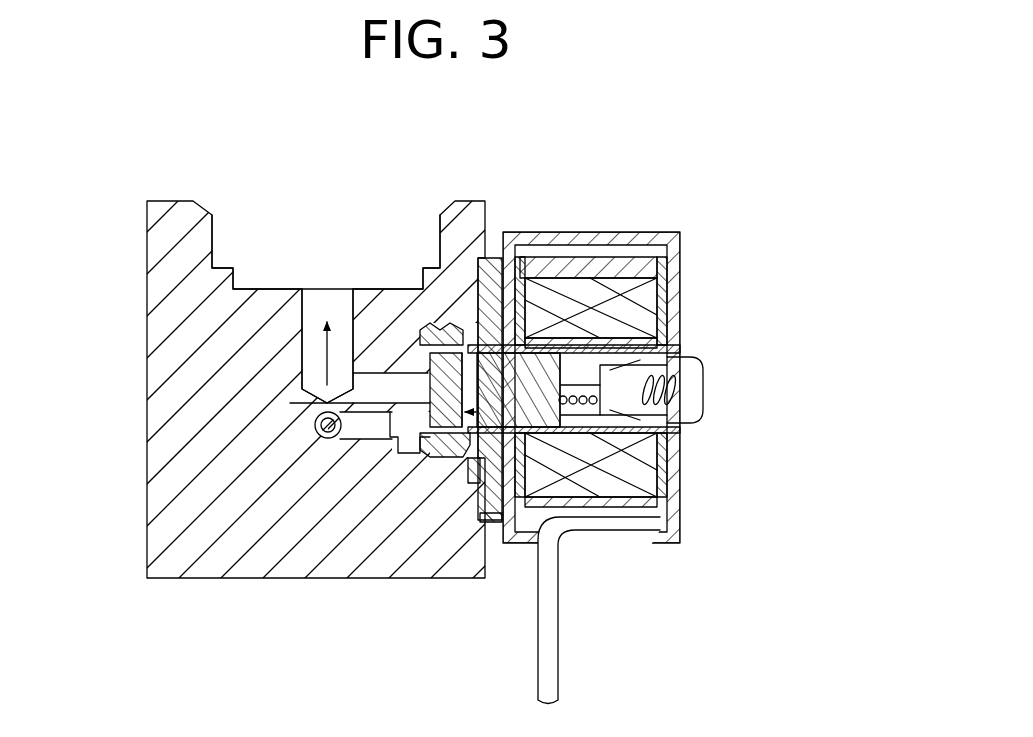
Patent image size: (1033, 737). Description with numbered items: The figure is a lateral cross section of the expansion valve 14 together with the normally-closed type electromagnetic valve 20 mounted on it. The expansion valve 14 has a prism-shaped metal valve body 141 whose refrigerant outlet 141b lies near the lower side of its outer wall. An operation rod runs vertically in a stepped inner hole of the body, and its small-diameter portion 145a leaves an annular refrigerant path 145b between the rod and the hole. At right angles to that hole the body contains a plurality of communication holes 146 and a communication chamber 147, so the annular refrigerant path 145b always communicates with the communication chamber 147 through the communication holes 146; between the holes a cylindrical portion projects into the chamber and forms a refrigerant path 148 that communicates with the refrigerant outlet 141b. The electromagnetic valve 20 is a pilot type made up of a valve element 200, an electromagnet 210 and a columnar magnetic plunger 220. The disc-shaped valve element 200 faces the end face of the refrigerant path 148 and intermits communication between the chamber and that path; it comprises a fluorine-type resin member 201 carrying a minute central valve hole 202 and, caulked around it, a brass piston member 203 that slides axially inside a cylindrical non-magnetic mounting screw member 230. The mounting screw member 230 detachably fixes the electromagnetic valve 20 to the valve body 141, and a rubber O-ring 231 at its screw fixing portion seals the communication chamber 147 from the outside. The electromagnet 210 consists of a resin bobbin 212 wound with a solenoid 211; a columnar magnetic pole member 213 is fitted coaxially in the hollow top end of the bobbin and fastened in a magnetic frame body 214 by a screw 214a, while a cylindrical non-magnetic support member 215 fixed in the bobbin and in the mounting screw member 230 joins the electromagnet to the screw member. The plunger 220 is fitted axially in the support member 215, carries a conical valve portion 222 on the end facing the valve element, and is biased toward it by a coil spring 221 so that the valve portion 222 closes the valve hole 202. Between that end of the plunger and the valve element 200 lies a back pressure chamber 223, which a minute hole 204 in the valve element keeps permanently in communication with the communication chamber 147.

The expansion valve 14 is at (132, 333).
The valve body 141 is at (177, 422).
The refrigerant outlet 141b is at (276, 232).
The small-diameter portion 145a is at (323, 440).
The annular refrigerant path 145b is at (315, 423).
The communication hole 146 is at (357, 440).
The communication chamber 147 is at (392, 437).
The refrigerant path 148 is at (375, 388).
The normally-closed type electromagnetic valve 20 is at (616, 422).
The valve element 200 is at (680, 502).
The resin member 201 is at (660, 528).
The valve hole 202 is at (402, 457).
The piston member 203 is at (437, 440).
The minute hole 204 is at (700, 373).
The electromagnet 210 is at (629, 341).
The solenoid 211 is at (660, 276).
The bobbin 212 is at (660, 298).
The magnetic pole member 213 is at (672, 362).
The magnetic frame body 214 is at (625, 390).
The valve port 214a is at (695, 410).
The support member 215 is at (660, 315).
The plunger 220 is at (620, 257).
The coil spring 221 is at (660, 350).
The valve portion 222 is at (680, 477).
The back pressure chamber 223 is at (705, 384).
The mounting screw member 230 is at (578, 345).
The O-ring 231 is at (497, 258).